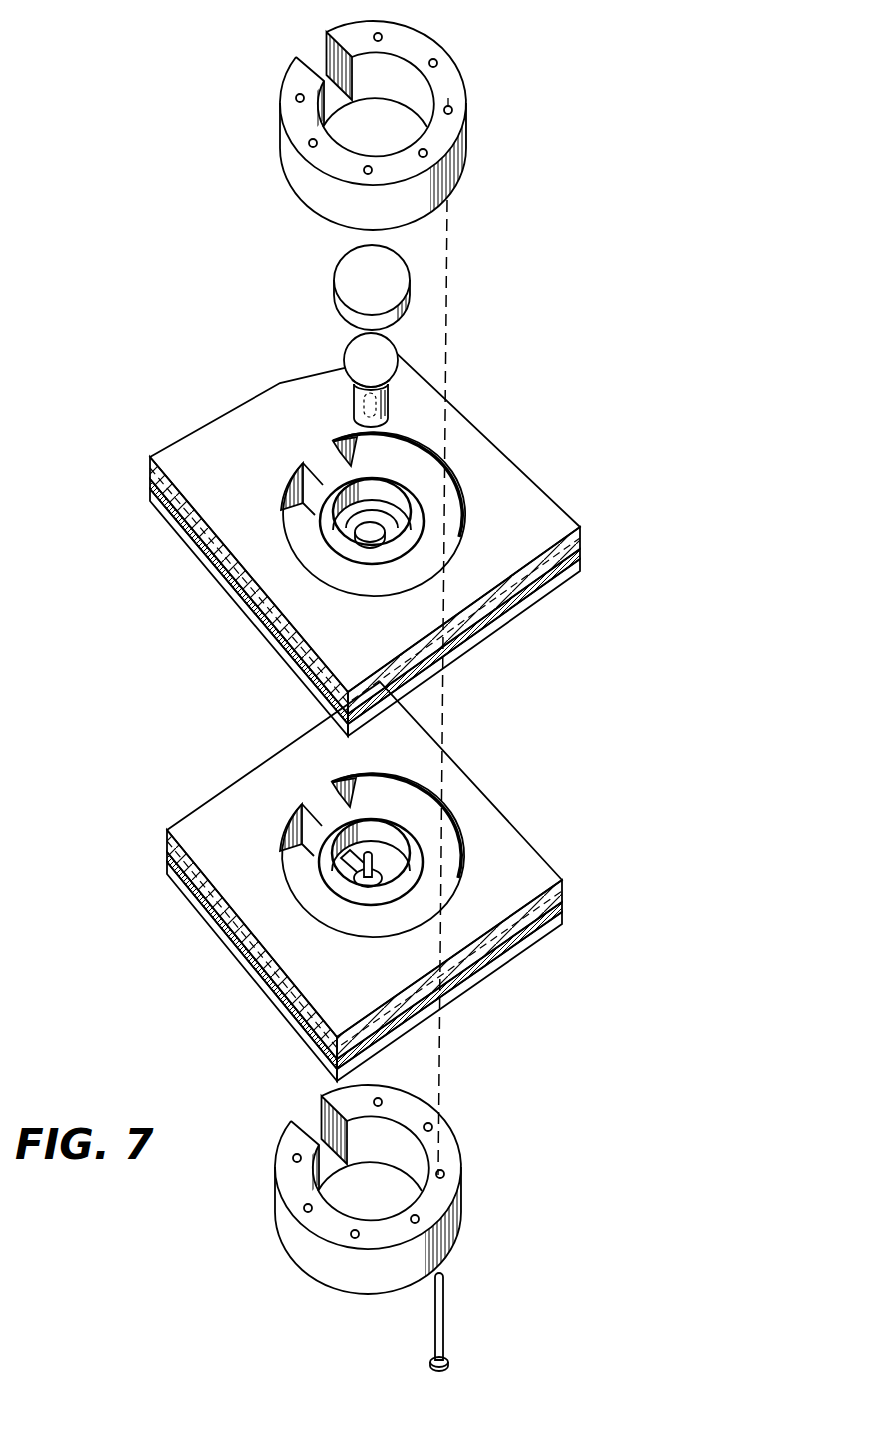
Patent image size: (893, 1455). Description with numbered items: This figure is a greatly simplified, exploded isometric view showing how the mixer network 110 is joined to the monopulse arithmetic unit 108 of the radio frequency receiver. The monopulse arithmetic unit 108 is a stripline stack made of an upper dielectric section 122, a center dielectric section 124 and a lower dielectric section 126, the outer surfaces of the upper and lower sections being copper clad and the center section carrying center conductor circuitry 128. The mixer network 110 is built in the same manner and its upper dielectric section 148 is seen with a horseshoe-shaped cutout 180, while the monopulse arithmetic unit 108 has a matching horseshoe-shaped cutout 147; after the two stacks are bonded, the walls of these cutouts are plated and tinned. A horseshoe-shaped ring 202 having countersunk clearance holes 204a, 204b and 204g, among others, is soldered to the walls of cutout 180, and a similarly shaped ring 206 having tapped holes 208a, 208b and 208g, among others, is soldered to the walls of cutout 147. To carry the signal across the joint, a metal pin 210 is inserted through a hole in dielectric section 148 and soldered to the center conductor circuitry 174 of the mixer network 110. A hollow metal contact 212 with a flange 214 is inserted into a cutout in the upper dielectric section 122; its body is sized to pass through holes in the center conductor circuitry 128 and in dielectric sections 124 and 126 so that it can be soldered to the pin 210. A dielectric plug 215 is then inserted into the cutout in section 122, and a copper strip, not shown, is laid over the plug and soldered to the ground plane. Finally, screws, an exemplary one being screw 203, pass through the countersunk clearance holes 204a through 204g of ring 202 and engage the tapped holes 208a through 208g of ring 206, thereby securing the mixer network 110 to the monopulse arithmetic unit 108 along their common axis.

The monopulse arithmetic unit 108 is at (320, 540).
The mixer network 110 is at (335, 881).
The upper dielectric section 122 is at (150, 458).
The center dielectric section 124 is at (178, 527).
The lower dielectric section 126 is at (205, 560).
The center conductor circuitry 128 is at (352, 530).
The horseshoe-shaped cutout 147 is at (297, 540).
The upper dielectric section 148 is at (167, 840).
The center conductor circuitry 174 is at (343, 840).
The horseshoe-shaped cutout 180 is at (293, 890).
The horseshoe-shaped ring 202 is at (457, 1215).
The screw 203 is at (443, 1292).
The countersunk clearance hole 204a is at (293, 1158).
The countersunk clearance hole 204b is at (304, 1210).
The countersunk clearance hole 204g is at (381, 1099).
The horseshoe-shaped ring 206 is at (467, 88).
The tapped hole 208a is at (297, 97).
The tapped hole 208b is at (309, 146).
The tapped hole 208g is at (383, 33).
The metal pin 210 is at (373, 858).
The metal contact 212 is at (388, 393).
The flange 214 is at (350, 346).
The dielectric plug 215 is at (410, 272).